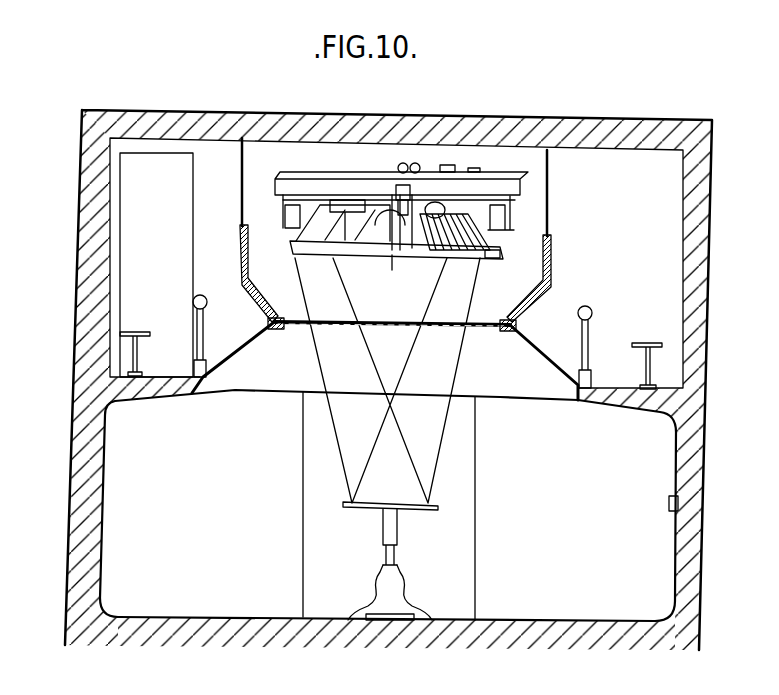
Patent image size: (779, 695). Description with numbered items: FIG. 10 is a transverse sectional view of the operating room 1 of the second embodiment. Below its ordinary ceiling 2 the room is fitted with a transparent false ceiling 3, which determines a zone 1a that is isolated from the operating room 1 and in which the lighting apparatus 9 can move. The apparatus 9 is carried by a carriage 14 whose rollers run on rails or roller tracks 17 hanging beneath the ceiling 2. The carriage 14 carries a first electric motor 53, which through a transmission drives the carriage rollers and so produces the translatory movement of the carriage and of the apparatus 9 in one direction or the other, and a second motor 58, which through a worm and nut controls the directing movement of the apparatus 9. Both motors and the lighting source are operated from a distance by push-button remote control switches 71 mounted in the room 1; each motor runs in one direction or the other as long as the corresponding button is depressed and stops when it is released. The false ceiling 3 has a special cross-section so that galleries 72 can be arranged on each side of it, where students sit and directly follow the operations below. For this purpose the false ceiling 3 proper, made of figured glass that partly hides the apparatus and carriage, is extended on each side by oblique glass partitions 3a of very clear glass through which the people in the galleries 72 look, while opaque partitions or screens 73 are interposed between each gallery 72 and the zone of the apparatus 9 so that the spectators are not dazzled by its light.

The operating room 1 is at (648, 455).
The zone 1a is at (302, 158).
The ordinary ceiling 2 is at (573, 124).
The transparent false ceiling 3 is at (307, 327).
The oblique glass partitions 3a is at (725, 300).
The lighting apparatus 9 is at (484, 260).
The carriage 14 is at (490, 180).
The roller tracks 17 is at (280, 222).
The first electric motor 53 is at (407, 170).
The second motor 58 is at (450, 170).
The remote control switches 71 is at (680, 503).
The galleries 72 is at (137, 178).
The opaque partitions or screens 73 is at (242, 237).